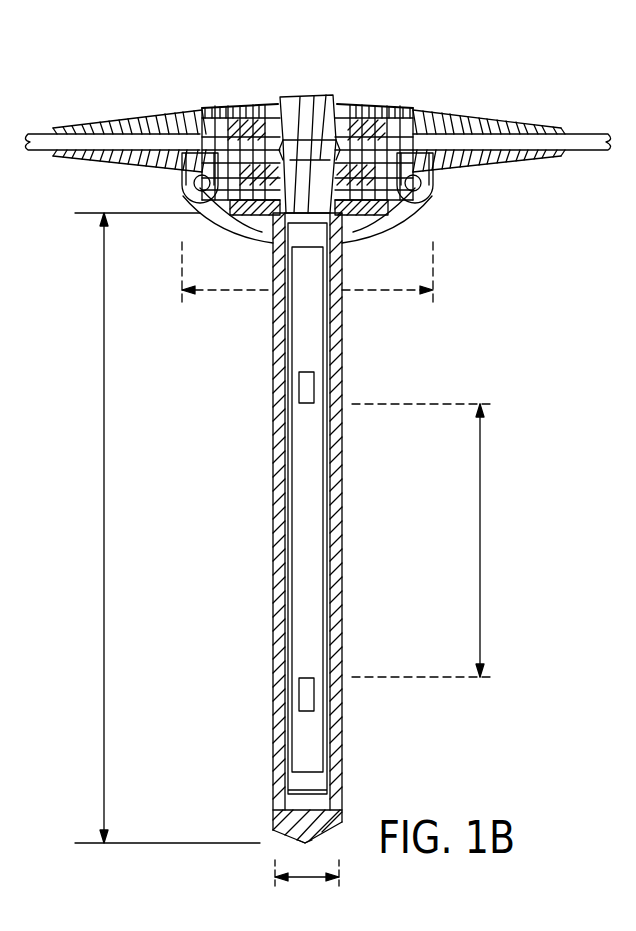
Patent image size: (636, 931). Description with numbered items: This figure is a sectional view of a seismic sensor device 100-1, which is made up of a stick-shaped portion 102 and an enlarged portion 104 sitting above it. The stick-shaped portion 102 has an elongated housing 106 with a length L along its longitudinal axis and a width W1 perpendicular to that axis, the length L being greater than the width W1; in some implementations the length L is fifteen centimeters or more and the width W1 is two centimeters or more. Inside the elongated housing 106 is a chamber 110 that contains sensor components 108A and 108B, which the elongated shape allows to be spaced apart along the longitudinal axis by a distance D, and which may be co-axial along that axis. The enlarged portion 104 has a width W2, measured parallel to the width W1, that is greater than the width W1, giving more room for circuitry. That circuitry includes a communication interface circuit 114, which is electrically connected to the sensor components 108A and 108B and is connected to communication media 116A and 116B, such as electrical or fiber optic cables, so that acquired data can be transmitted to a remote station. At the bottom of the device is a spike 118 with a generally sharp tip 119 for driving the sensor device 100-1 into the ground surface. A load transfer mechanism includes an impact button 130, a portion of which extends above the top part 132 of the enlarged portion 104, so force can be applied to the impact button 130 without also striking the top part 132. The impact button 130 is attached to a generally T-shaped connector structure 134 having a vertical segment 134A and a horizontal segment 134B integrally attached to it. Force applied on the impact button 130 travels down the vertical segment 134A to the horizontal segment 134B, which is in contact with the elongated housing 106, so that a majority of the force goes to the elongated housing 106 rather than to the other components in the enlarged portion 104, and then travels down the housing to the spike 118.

The seismic sensor device 100-1 is at (406, 47).
The stick-shaped portion 102 is at (346, 555).
The enlarged portion 104 is at (418, 215).
The elongated housing 106 is at (340, 497).
The sensor component 108A is at (305, 388).
The sensor component 108B is at (305, 697).
The chamber 110 is at (235, 214).
The communication interface circuit 114 is at (397, 110).
The communication medium 116A is at (42, 140).
The communication medium 116B is at (585, 140).
The spike 118 is at (297, 832).
The sharp tip 119 is at (303, 845).
The impact button 130 is at (302, 95).
The top part 132 is at (262, 104).
The T-shaped connector structure 134 is at (318, 97).
The vertical segment 134A is at (205, 193).
The horizontal segment 134B is at (262, 228).
The length L is at (104, 528).
The width W1 is at (307, 878).
The width W2 is at (224, 290).
The distance D is at (480, 540).